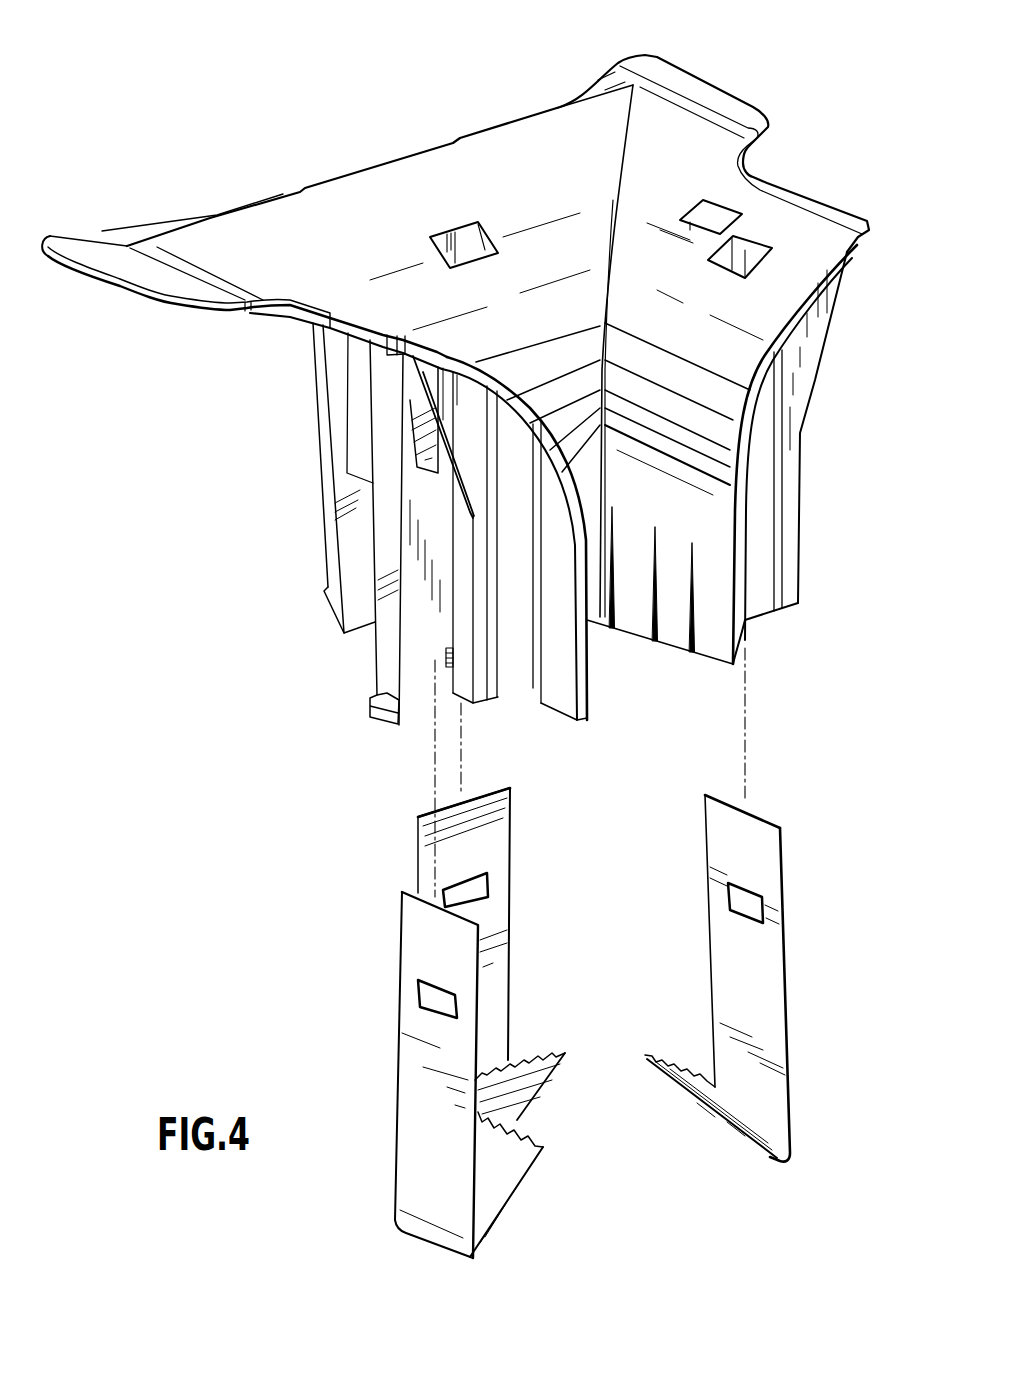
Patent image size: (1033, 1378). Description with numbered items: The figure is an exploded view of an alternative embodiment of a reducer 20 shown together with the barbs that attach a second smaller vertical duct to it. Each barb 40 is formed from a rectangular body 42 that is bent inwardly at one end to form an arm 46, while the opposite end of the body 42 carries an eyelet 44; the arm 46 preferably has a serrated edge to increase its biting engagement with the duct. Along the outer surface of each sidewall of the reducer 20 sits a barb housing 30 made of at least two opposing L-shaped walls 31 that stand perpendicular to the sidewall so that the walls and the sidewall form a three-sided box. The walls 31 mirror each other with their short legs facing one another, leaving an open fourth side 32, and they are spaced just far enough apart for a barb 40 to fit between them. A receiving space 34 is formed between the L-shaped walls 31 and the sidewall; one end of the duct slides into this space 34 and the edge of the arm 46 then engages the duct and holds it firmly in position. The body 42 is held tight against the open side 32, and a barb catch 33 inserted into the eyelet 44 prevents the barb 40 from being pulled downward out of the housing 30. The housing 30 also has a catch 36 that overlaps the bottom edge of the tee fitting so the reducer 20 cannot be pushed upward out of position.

The reducer 20 is at (474, 458).
The barb housing 30 is at (420, 535).
The L-shaped wall 31 is at (383, 640).
The open fourth side 32 is at (453, 682).
The barb catch 33 is at (407, 440).
The receiving space 34 is at (538, 658).
The catch 36 is at (377, 717).
The barb 40 is at (746, 986).
The rectangular body 42 is at (732, 1007).
The eyelet 44 is at (727, 897).
The arm 46 is at (700, 1108).